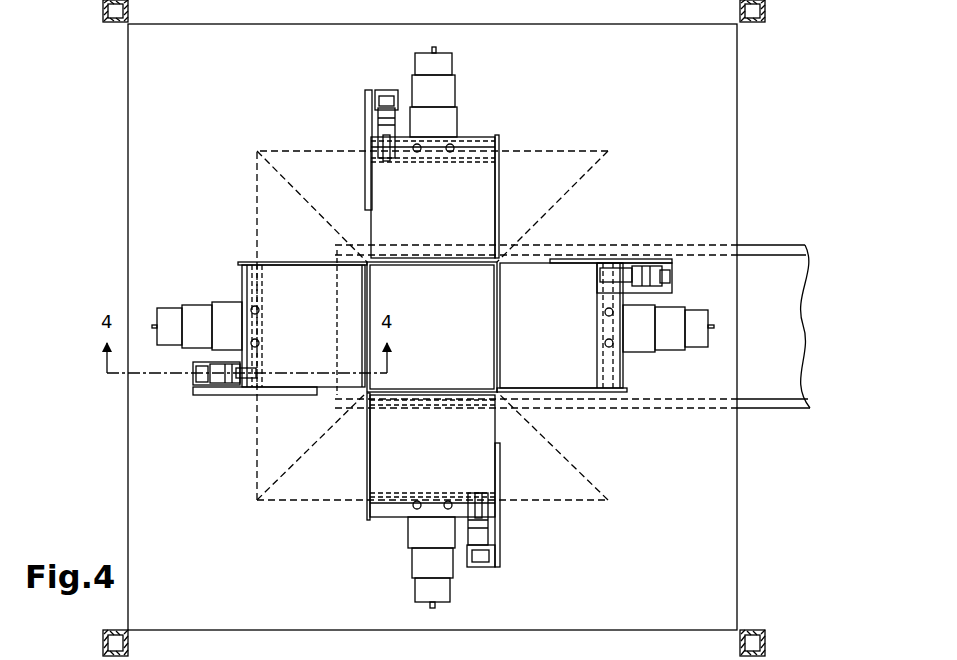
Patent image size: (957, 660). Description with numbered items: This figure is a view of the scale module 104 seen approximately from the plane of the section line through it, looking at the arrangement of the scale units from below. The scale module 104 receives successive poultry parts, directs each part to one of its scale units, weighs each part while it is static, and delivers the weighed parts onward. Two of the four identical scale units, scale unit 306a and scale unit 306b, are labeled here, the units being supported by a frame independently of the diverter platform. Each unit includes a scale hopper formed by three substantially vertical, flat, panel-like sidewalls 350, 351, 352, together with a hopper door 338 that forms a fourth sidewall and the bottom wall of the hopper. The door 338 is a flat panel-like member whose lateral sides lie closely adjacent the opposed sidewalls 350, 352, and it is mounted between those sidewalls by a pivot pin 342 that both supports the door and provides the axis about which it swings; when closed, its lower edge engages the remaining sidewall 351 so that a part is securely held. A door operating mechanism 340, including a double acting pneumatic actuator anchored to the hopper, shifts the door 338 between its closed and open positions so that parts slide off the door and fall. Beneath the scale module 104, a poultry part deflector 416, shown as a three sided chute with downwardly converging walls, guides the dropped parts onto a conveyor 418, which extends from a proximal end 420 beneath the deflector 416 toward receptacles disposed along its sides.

The scale module 104 is at (82, 327).
The scale unit 306a is at (576, 394).
The scale unit 306b is at (258, 317).
The hopper door 338 is at (313, 323).
The door operating mechanism 340 is at (185, 389).
The pivot pin 342 is at (243, 290).
The hopper sidewall 350 is at (327, 266).
The hopper sidewall 351 is at (364, 302).
The hopper sidewall 352 is at (320, 387).
The poultry part deflector 416 is at (555, 151).
The conveyor 418 is at (753, 378).
The proximal end 420 is at (242, 283).